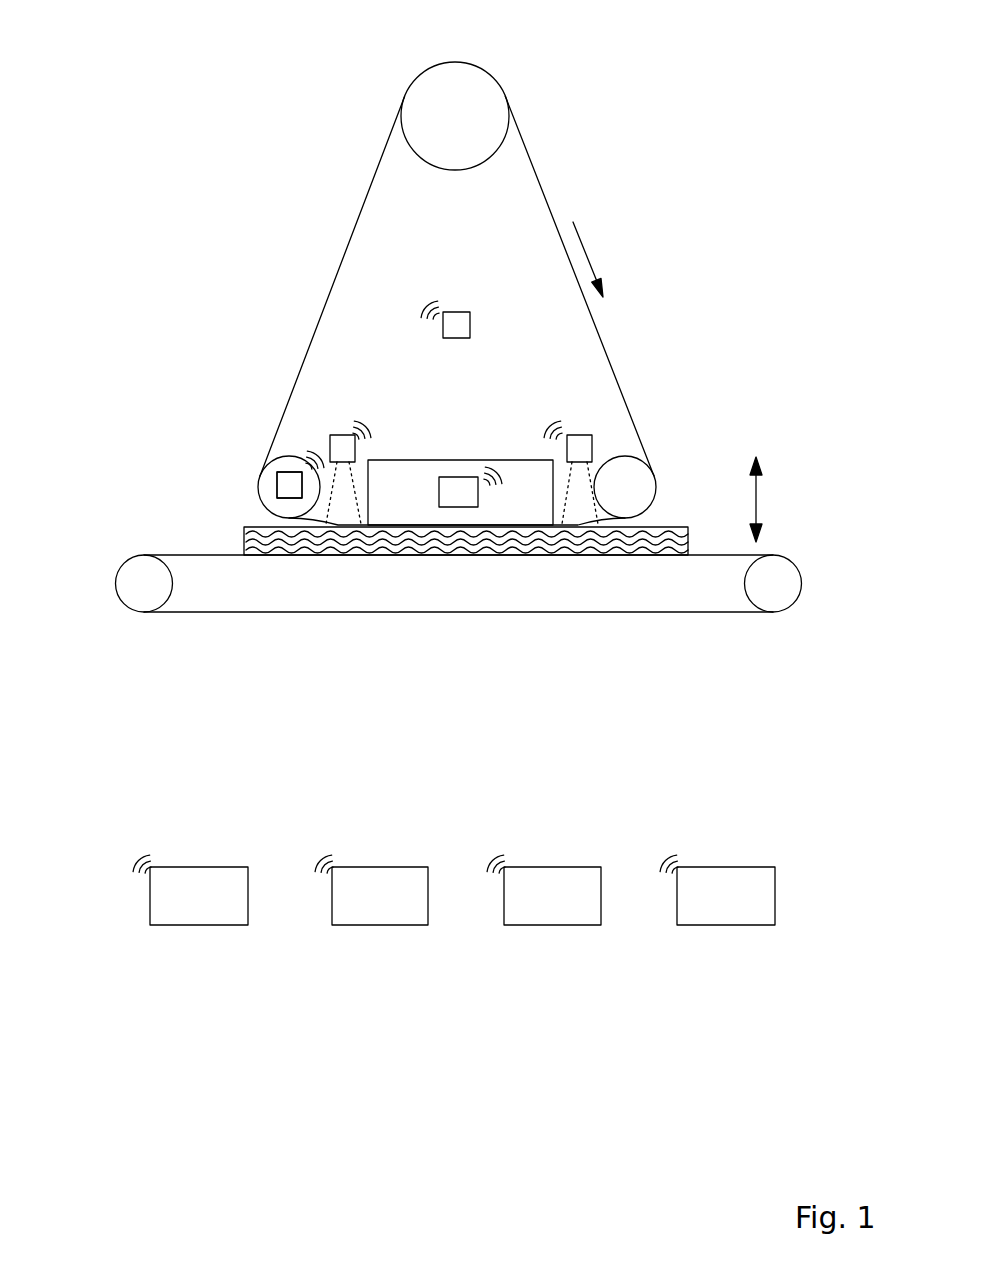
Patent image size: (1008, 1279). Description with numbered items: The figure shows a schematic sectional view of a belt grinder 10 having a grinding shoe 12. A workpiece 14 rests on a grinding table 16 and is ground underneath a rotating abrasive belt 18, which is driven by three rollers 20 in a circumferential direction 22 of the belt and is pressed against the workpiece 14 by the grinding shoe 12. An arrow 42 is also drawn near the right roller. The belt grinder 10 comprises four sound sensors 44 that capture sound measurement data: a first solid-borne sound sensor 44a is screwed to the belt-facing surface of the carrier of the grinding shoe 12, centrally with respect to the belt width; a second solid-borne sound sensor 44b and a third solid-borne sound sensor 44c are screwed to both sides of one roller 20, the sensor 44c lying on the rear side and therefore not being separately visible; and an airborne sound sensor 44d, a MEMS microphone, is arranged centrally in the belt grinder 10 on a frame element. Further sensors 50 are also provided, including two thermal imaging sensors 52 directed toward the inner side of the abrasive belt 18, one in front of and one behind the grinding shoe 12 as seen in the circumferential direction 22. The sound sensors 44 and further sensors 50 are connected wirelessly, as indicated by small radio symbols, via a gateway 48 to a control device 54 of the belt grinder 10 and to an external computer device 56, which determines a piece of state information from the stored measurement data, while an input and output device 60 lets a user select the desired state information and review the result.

The belt grinder 10 is at (118, 145).
The grinding shoe 12 is at (507, 505).
The workpiece 14 is at (245, 550).
The grinding table 16 is at (280, 613).
The abrasive belt 18 is at (548, 195).
The rollers 20 is at (487, 100).
The circumferential direction of the belt 22 is at (585, 250).
The height adjustment direction 42 is at (767, 500).
The sound sensors 44 is at (329, 469).
The first solid-borne sound sensor 44a is at (457, 505).
The second solid-borne sound sensor 44b is at (283, 480).
The third solid-borne sound sensor 44c is at (289, 485).
The airborne sound sensor 44d is at (458, 325).
The further sensors 50 is at (452, 391).
The thermal imaging sensors 52 is at (338, 437).
The gateway 48 is at (197, 902).
The control device 54 is at (372, 902).
The computer device 56 is at (544, 902).
The input and output device 60 is at (718, 902).